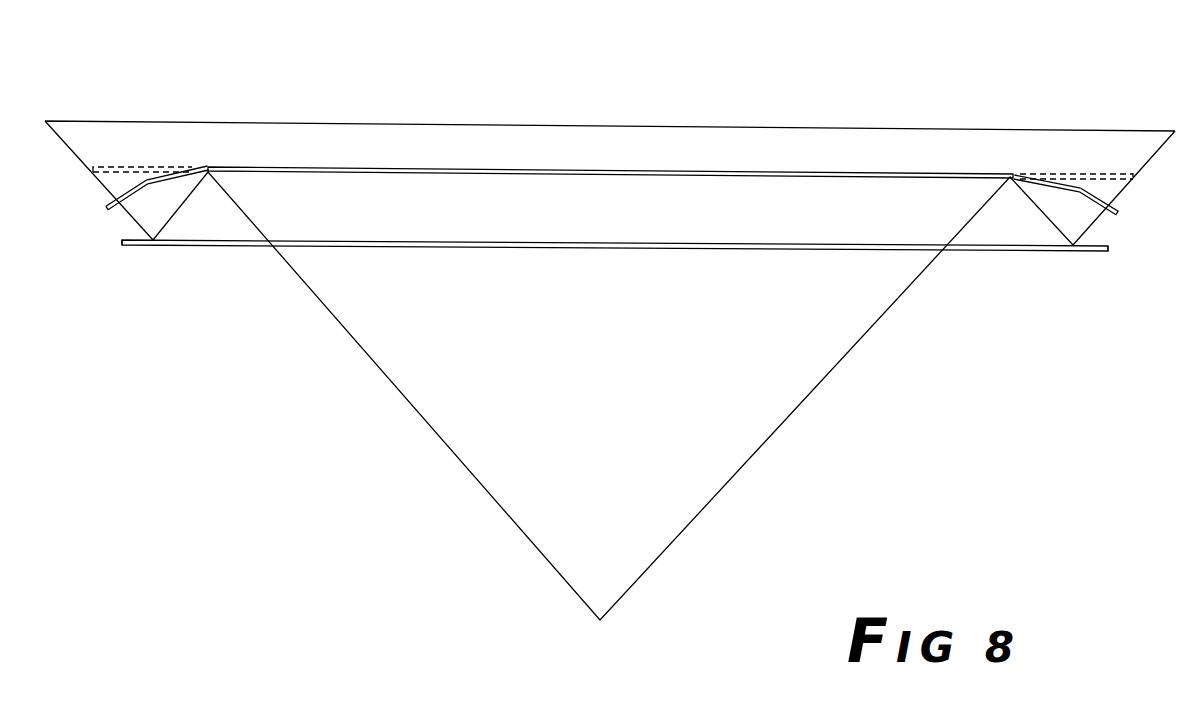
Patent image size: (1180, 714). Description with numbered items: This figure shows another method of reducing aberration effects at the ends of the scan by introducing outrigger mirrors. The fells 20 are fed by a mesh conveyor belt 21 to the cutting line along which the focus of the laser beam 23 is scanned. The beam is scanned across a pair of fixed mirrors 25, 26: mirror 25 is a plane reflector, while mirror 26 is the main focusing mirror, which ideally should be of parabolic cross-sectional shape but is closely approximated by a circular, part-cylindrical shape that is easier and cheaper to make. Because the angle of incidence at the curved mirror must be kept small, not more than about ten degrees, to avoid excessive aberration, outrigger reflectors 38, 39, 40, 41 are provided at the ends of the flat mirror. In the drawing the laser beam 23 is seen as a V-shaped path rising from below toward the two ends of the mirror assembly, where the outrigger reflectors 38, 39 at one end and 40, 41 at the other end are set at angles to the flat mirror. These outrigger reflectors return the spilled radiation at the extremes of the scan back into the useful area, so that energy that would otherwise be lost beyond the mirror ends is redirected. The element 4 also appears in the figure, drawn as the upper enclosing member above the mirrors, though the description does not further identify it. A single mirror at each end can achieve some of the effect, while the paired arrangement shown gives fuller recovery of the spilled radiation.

The hull / frame member 4 is at (362, 123).
The fells 20 is at (135, 247).
The mesh conveyor belt 21 is at (1098, 253).
The laser beam 23 is at (768, 438).
The mirror 25 is at (662, 172).
The mirror 26 is at (717, 250).
The outrigger reflector 38 is at (1050, 179).
The outrigger reflector 39 is at (1100, 198).
The outrigger reflector 40 is at (128, 193).
The outrigger reflector 41 is at (175, 170).